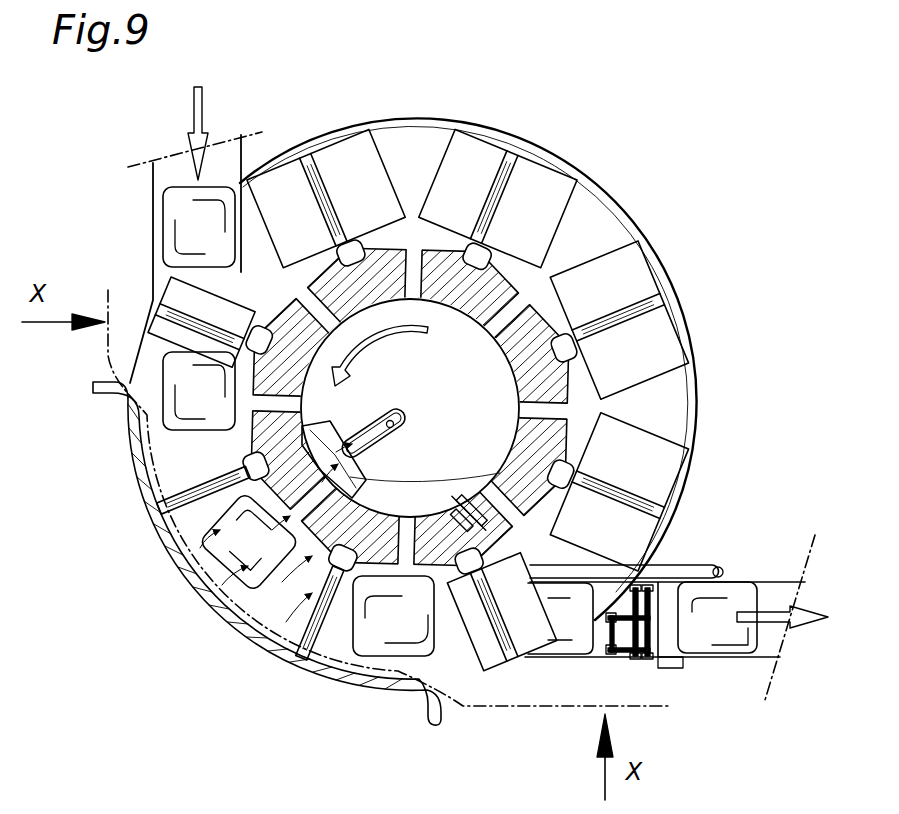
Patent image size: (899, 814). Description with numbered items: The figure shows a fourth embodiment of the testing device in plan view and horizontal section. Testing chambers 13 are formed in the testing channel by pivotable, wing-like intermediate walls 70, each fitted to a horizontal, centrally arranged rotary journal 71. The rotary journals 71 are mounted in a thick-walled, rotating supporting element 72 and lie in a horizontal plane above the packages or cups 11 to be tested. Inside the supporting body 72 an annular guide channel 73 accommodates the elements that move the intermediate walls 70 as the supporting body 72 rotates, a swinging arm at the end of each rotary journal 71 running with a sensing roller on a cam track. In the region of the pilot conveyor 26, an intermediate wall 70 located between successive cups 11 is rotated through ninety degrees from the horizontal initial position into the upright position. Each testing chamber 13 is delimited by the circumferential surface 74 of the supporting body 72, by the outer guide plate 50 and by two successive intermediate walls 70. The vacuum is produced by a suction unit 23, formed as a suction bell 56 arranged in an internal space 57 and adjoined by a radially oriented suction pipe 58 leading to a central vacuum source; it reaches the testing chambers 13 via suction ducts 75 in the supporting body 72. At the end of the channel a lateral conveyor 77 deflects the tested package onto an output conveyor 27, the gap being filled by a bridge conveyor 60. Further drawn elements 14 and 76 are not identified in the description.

The packages or cups 11 is at (185, 212).
The testing chamber 13 is at (345, 507).
The infeed guide wall 14 is at (141, 298).
The suction unit 23 is at (398, 448).
The pilot conveyor 26 is at (228, 146).
The output conveyor 27 is at (676, 631).
The guide plate 50 is at (136, 458).
The suction bell 56 is at (406, 440).
The internal space 57 is at (529, 290).
The suction pipe 58 is at (439, 338).
The bridge conveyor 60 is at (636, 660).
The intermediate wall 70 is at (408, 396).
The rotary journal 71 is at (305, 160).
The supporting element 72 is at (626, 230).
The annular guide channel 73 is at (458, 545).
The circumferential surface 74 is at (563, 430).
The suction duct 75 is at (410, 255).
The transfer station 76 is at (222, 607).
The lateral conveyor 77 is at (673, 573).